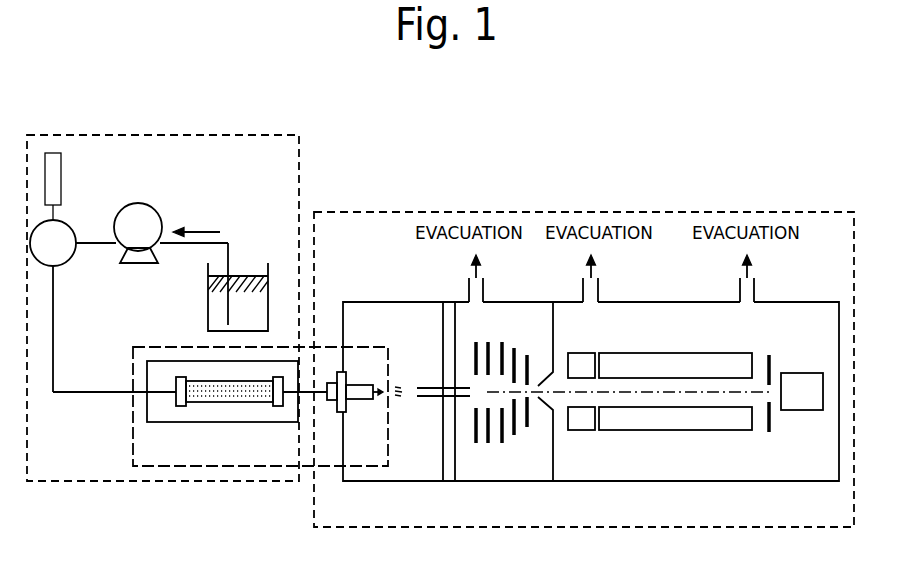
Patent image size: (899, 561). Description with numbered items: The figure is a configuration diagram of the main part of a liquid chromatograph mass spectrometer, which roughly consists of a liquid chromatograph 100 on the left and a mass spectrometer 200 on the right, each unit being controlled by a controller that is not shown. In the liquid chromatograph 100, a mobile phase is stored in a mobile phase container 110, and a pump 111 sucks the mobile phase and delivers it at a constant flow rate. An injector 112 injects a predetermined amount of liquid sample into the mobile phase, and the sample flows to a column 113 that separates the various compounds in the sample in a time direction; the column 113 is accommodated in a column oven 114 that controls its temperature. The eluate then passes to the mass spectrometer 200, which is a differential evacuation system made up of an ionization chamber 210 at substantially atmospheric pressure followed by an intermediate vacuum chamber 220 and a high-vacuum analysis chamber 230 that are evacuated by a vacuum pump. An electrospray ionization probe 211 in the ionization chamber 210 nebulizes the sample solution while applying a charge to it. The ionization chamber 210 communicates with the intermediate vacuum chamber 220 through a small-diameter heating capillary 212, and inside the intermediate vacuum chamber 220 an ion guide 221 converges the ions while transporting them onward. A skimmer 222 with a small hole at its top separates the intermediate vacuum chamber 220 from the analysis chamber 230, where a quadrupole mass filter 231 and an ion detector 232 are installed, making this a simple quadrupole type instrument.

The liquid chromatograph 100 is at (237, 135).
The mobile phase container 110 is at (208, 313).
The pump 111 is at (143, 265).
The injector 112 is at (73, 257).
The column 113 is at (242, 403).
The column oven 114 is at (223, 423).
The mass spectrometer 200 is at (660, 212).
The ionization chamber 210 is at (407, 467).
The electrospray ionization probe 211 is at (353, 402).
The heating capillary 212 is at (435, 388).
The intermediate vacuum chamber 220 is at (492, 467).
The ion guide 221 is at (510, 342).
The skimmer 222 is at (545, 403).
The analysis chamber 230 is at (590, 468).
The quadrupole mass filter 231 is at (695, 352).
The ion detector 232 is at (803, 373).